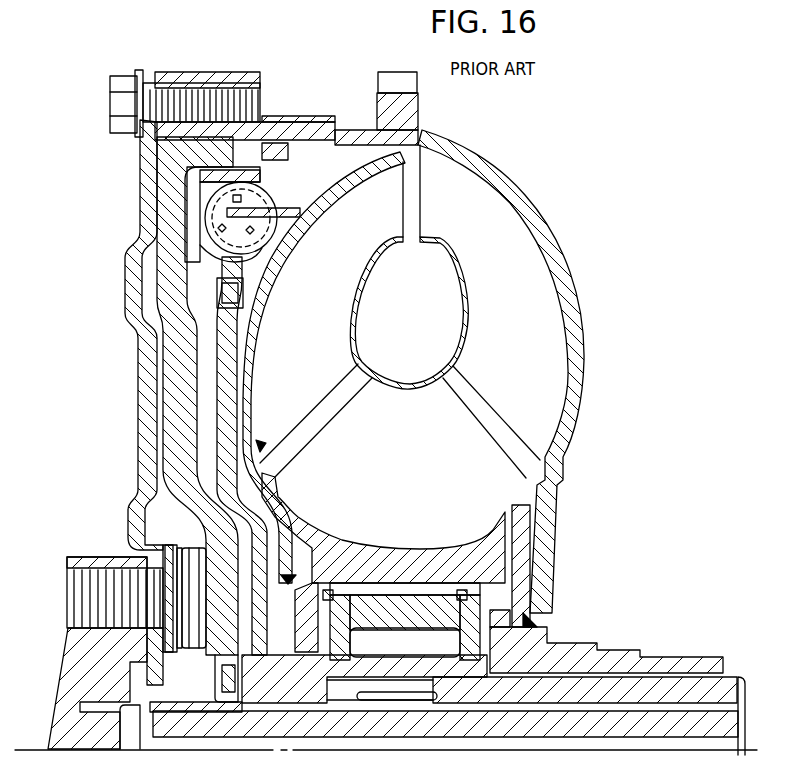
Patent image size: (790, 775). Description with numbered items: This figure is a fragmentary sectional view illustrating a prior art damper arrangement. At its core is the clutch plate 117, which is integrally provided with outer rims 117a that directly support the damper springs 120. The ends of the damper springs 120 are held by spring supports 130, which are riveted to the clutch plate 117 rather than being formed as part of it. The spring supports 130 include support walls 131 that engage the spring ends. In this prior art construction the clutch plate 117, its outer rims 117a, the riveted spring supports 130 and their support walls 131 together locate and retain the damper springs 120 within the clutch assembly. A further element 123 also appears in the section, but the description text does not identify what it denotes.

The clutch plate 117 is at (227, 402).
The outer rims 117a is at (270, 118).
The damper springs 120 is at (278, 190).
The mounting arm 123 is at (139, 208).
The spring supports 130 is at (258, 256).
The support walls 131 is at (236, 272).